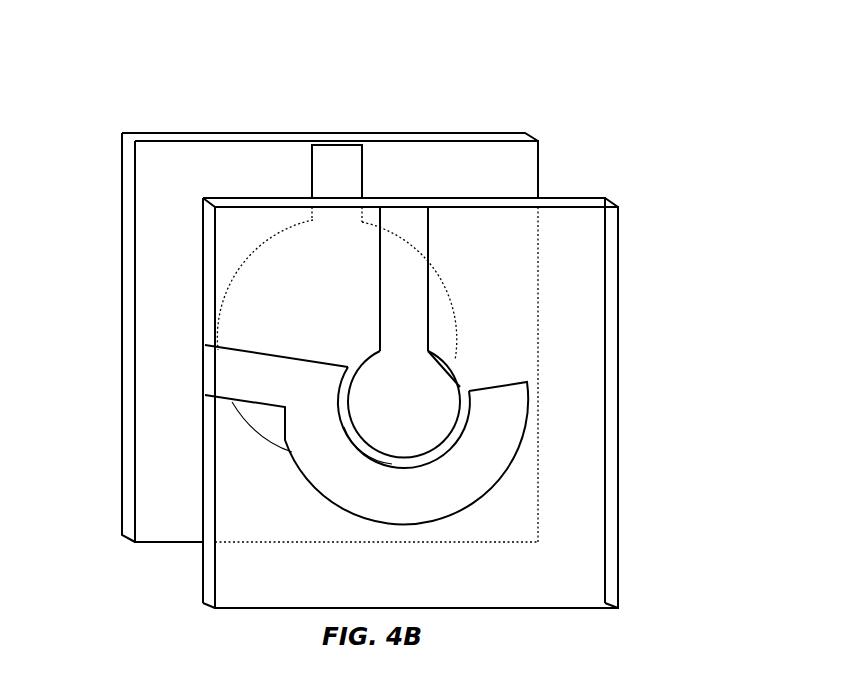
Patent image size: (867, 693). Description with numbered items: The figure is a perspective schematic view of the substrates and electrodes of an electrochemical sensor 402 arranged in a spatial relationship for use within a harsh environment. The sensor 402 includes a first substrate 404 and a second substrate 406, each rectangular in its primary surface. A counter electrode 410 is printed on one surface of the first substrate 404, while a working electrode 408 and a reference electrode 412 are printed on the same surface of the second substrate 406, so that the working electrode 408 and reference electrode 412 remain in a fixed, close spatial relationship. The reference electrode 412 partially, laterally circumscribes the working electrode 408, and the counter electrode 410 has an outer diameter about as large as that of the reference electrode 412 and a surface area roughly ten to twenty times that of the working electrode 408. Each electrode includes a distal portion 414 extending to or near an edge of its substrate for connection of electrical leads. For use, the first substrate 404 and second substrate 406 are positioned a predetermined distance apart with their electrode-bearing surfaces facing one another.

The electrochemical sensor 402 is at (618, 127).
The first substrate 404 is at (187, 189).
The second substrate 406 is at (595, 282).
The working electrode 408 is at (425, 419).
The counter electrode 410 is at (292, 287).
The reference electrode 412 is at (425, 504).
The distal portion 414 is at (337, 125).